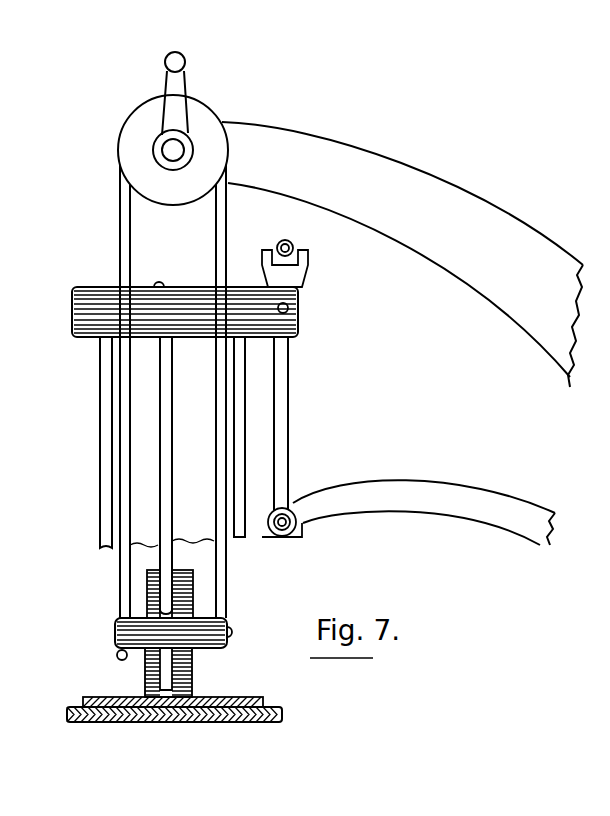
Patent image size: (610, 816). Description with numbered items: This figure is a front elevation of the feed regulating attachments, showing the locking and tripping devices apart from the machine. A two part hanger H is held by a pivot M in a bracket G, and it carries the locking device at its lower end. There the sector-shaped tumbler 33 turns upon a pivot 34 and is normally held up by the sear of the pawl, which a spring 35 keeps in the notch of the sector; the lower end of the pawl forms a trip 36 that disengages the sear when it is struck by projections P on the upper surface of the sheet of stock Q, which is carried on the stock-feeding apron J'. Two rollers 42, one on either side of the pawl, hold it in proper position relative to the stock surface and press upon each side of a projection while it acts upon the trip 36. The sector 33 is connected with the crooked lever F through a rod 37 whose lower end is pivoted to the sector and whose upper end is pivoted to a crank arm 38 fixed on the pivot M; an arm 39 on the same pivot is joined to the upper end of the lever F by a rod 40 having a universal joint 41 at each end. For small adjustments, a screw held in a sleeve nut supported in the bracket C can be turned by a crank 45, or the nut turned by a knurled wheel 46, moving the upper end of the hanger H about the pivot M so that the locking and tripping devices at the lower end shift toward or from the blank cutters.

The sector-shaped tumbler 33 is at (176, 574).
The pivot 34 is at (232, 632).
The spring 35 is at (116, 655).
The trip 36 is at (192, 677).
The rod 37 is at (172, 461).
The crank arm 38 is at (159, 286).
The arm 39 is at (297, 273).
The rod 40 is at (289, 378).
The universal joint 41 is at (290, 248).
The rollers 42 is at (192, 664).
The crank 45 is at (180, 85).
The knurled wheel 46 is at (128, 127).
The bracket C is at (402, 254).
The crooked lever F is at (408, 505).
The bracket G is at (100, 407).
The two part hanger H is at (121, 235).
The pivot M is at (72, 308).
The projections P is at (165, 722).
The sheet of stock Q is at (263, 700).
The stock-feeding apron J' is at (172, 726).